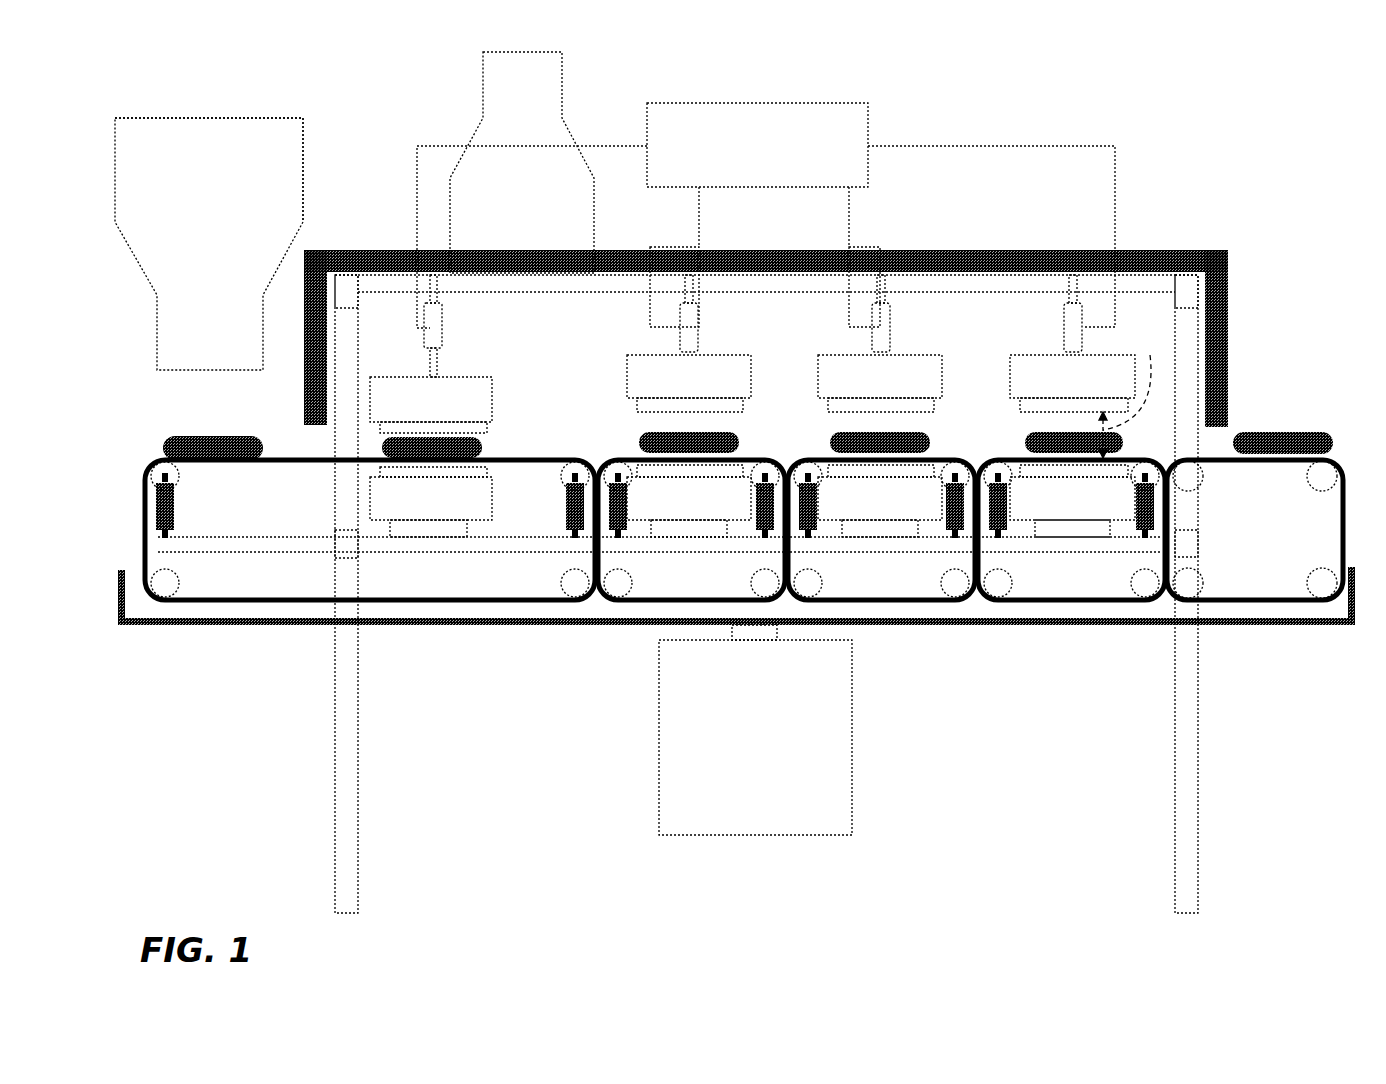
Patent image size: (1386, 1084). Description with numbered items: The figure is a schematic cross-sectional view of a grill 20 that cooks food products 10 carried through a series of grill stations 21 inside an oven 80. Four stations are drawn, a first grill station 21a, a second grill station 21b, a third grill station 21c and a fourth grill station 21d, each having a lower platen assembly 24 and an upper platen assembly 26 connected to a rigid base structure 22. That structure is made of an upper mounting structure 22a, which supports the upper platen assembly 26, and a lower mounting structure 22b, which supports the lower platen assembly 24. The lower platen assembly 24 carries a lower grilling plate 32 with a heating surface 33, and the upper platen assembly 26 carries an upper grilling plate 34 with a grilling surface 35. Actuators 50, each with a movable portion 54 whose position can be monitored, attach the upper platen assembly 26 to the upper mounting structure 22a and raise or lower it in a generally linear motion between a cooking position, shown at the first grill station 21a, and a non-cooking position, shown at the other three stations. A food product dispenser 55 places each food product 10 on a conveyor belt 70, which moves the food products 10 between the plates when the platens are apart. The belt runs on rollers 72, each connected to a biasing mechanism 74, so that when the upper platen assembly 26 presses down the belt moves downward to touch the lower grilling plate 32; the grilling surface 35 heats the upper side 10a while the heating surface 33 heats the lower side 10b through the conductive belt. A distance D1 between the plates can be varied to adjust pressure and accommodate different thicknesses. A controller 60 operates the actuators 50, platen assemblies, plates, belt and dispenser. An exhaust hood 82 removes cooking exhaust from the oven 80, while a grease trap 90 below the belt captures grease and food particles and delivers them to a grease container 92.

The food product 10 is at (212, 437).
The upper side 10a is at (172, 437).
The lower side 10b is at (175, 458).
The grill 20 is at (135, 110).
The grill stations 21 is at (752, 406).
The first grill station 21a is at (466, 406).
The second grill station 21b is at (716, 334).
The third grill station 21c is at (906, 334).
The fourth grill station 21d is at (1046, 322).
The rigid base structure 22 is at (1195, 318).
The upper mounting structure 22a is at (865, 283).
The lower mounting structure 22b is at (828, 548).
The lower platen assembly 24 is at (492, 505).
The upper platen assembly 26 is at (415, 375).
The lower grilling plate 32 is at (410, 477).
The heating surface 33 is at (420, 465).
The upper grilling plate 34 is at (410, 427).
The grilling surface 35 is at (420, 432).
The actuators 50 is at (442, 322).
The movable portion 54 is at (437, 372).
The food product dispenser 55 is at (303, 180).
The controller 60 is at (856, 112).
The conveyor belt 70 is at (370, 530).
The roller 72 is at (172, 585).
The biasing mechanism 74 is at (175, 507).
The oven 80 is at (1215, 257).
The exhaust hood 82 is at (548, 70).
The grease trap 90 is at (876, 623).
The grease container 92 is at (808, 835).
The distance D1 is at (1132, 393).